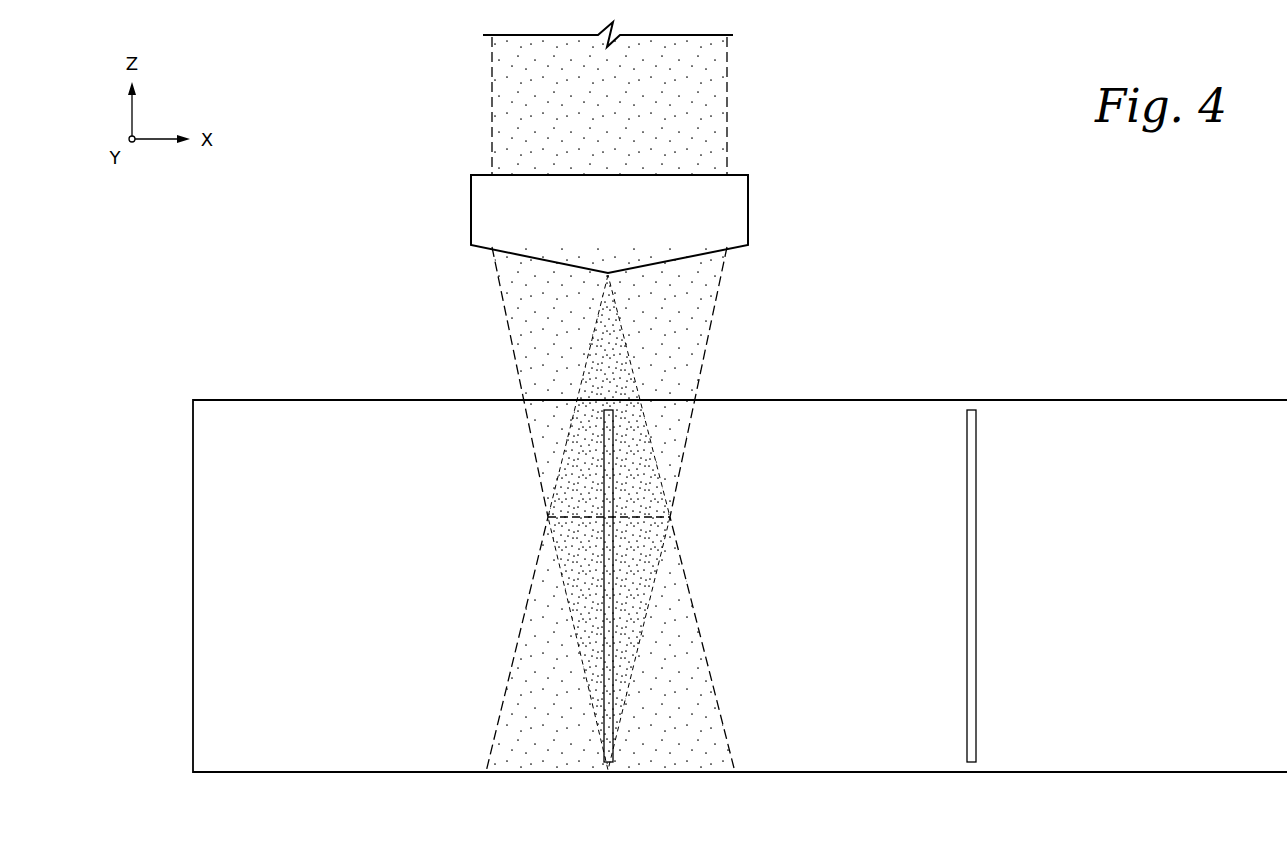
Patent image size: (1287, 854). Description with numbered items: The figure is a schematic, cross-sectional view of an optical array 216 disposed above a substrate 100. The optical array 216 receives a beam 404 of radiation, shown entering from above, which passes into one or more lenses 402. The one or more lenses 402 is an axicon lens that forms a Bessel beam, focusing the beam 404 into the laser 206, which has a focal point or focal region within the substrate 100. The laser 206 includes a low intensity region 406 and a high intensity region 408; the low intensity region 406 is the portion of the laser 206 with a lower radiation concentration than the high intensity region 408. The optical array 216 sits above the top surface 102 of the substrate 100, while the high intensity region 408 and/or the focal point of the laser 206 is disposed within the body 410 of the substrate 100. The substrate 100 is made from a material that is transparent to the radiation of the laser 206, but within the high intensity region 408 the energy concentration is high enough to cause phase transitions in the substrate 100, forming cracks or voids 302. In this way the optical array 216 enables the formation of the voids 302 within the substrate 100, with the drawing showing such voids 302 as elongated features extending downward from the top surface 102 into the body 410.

The substrate 100 is at (1237, 401).
The top surface 102 is at (248, 400).
The laser 206 is at (722, 330).
The optical array 216 is at (762, 194).
The voids 302 is at (610, 497).
The lenses 402 is at (471, 207).
The beam 404 is at (492, 89).
The low intensity region 406 is at (508, 322).
The high intensity region 408 is at (573, 497).
The body 410 is at (307, 595).